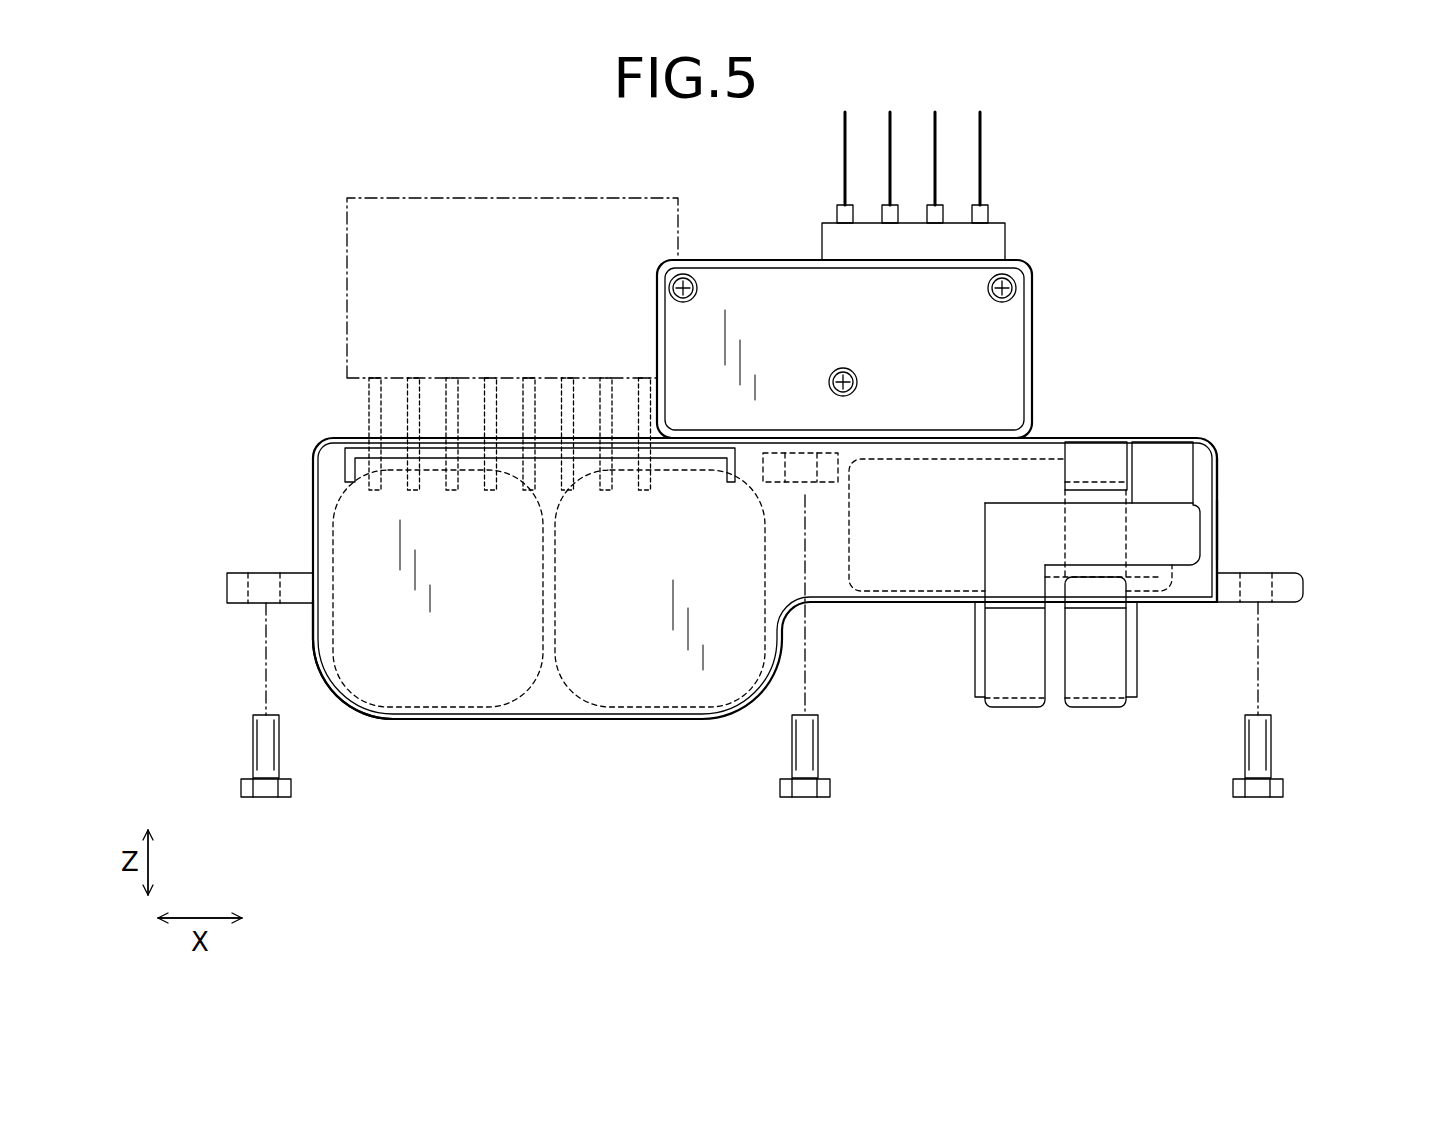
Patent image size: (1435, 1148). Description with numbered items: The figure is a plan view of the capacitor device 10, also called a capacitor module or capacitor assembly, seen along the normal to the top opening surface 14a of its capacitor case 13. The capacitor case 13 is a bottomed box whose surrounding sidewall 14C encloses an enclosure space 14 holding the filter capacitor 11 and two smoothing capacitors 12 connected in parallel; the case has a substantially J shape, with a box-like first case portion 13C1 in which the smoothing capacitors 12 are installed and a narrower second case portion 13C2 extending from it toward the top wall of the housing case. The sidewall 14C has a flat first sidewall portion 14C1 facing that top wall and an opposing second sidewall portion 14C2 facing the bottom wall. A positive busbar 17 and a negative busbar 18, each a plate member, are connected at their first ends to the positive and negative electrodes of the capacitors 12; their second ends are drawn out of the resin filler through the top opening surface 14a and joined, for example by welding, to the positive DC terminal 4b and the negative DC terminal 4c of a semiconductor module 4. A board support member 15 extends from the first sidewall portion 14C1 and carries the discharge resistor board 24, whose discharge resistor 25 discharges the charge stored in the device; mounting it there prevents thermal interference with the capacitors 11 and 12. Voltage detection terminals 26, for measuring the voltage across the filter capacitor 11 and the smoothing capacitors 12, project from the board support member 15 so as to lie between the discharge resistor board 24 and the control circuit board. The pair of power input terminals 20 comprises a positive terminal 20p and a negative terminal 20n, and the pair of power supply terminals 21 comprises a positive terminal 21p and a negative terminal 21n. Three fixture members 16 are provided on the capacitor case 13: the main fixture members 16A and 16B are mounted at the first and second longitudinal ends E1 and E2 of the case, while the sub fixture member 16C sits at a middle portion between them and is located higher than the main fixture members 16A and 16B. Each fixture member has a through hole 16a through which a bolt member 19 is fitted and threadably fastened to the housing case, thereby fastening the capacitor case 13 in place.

The semiconductor module 4 is at (620, 194).
The positive DC terminal 4b is at (451, 391).
The negative DC terminal 4c is at (364, 392).
The capacitor device 10 is at (789, 529).
The filter capacitor 11 is at (892, 595).
The smoothing capacitors 12 is at (596, 701).
The capacitor case 13 is at (789, 654).
The first case portion 13C1 is at (652, 740).
The second case portion 13C2 is at (1247, 491).
The enclosure space 14 is at (699, 569).
The top opening surface 14a is at (328, 497).
The surrounding sidewall 14C is at (439, 544).
The first sidewall portion 14C1 is at (353, 440).
The second sidewall portion 14C2 is at (400, 722).
The board support member 15 is at (876, 243).
The fixture members 16 is at (766, 485).
The main fixture member 16A is at (272, 570).
The main fixture member 16B is at (1263, 570).
The sub fixture member 16C is at (830, 447).
The through hole 16a is at (258, 608).
The positive busbar 17 is at (421, 391).
The negative busbar 18 is at (451, 391).
The bolt member 19 is at (268, 800).
The power input terminals 20 is at (1180, 433).
The negative terminal 20n is at (1102, 440).
The positive terminal 20p is at (1183, 454).
The power supply terminals 21 is at (1062, 665).
The positive terminal 21p is at (1013, 707).
The negative terminal 21n is at (1101, 679).
The discharge resistor board 24 is at (758, 296).
The discharge resistor 25 is at (770, 300).
The voltage detection terminals 26 is at (992, 108).
The first longitudinal end E1 is at (312, 632).
The second longitudinal end E2 is at (1218, 528).